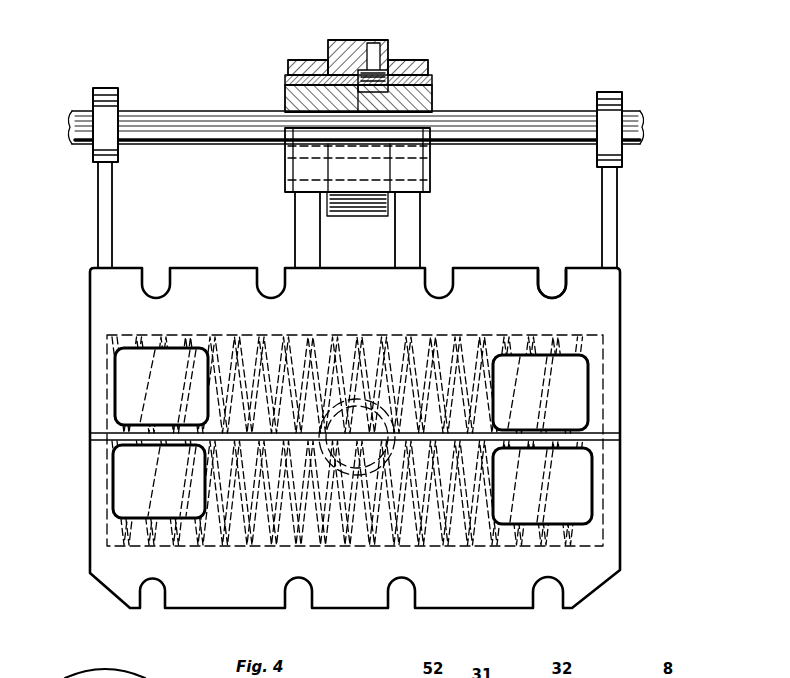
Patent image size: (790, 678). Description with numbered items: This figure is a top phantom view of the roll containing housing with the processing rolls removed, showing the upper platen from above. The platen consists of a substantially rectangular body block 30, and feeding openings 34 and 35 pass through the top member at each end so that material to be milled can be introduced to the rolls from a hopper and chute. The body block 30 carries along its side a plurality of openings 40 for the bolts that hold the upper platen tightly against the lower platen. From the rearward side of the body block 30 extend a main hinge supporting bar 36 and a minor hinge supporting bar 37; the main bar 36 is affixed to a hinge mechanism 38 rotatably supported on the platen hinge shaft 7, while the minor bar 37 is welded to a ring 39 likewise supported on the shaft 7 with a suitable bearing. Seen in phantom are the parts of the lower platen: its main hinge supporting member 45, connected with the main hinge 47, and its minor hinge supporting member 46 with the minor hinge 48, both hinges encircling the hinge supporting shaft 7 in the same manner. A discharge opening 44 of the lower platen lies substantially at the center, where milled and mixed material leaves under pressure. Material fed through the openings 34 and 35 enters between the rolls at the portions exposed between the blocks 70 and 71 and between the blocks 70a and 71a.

The platen hinge shaft 7 is at (513, 112).
The body block 30 is at (520, 279).
The feeding opening 34 is at (604, 428).
The feeding opening 35 is at (108, 415).
The main hinge supporting bar 36 is at (408, 224).
The minor hinge supporting bar 37 is at (105, 213).
The hinge mechanism 38 is at (433, 71).
The ring 39 is at (111, 89).
The openings 40 is at (550, 271).
The discharge opening 44 is at (357, 340).
The main hinge supporting member 45 is at (305, 222).
The minor hinge supporting member 46 is at (618, 217).
The main hinge 47 is at (309, 66).
The minor hinge 48 is at (623, 98).
The block 70 is at (575, 372).
The block 70a is at (130, 362).
The block 71 is at (572, 512).
The block 71a is at (137, 505).